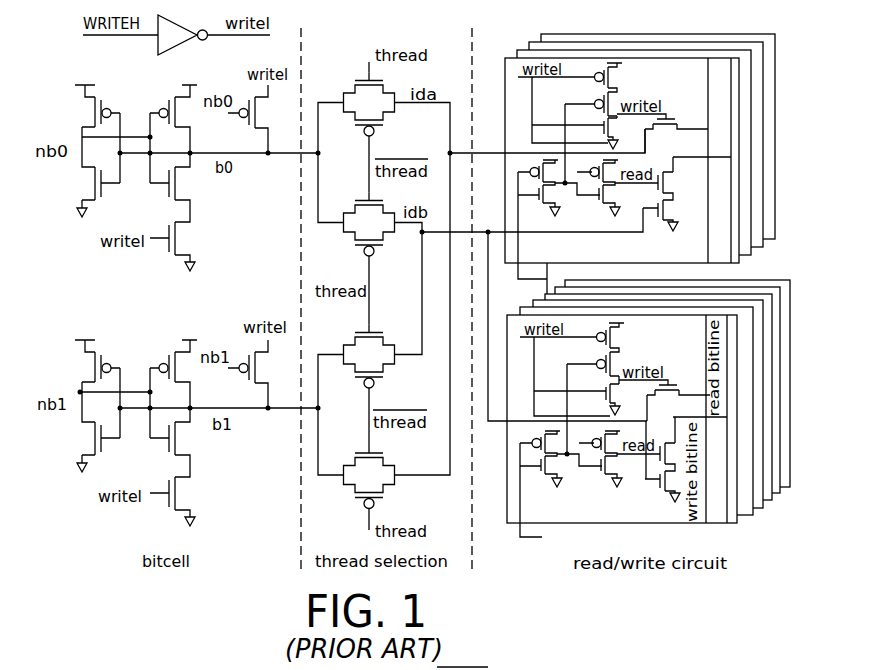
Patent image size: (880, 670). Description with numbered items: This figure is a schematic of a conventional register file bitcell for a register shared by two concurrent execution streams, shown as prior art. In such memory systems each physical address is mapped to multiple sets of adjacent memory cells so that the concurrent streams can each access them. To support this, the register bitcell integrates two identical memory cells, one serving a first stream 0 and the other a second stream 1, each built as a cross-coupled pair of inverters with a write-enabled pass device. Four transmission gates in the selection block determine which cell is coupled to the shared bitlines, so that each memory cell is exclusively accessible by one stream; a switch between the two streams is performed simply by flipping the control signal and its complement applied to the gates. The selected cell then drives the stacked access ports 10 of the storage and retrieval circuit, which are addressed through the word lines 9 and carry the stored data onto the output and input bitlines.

The access ports 10 is at (640, 133).
The pass transistor p0 0 is at (257, 119).
The pass transistor p1 1 is at (255, 374).
The wordline 9 is at (588, 496).